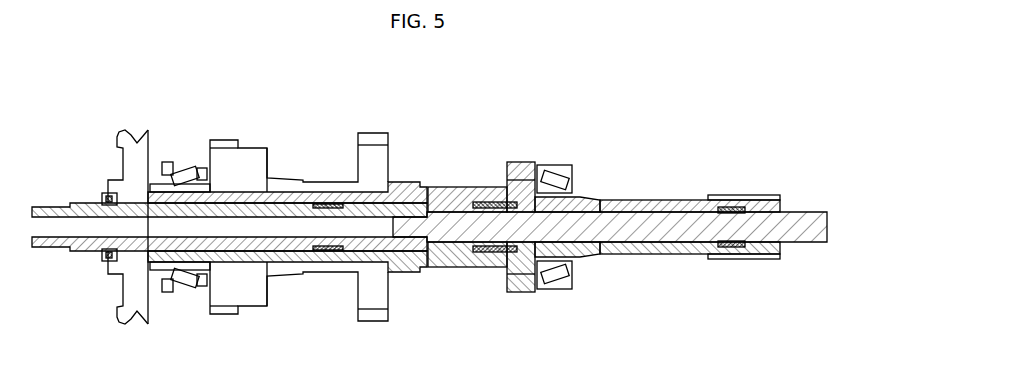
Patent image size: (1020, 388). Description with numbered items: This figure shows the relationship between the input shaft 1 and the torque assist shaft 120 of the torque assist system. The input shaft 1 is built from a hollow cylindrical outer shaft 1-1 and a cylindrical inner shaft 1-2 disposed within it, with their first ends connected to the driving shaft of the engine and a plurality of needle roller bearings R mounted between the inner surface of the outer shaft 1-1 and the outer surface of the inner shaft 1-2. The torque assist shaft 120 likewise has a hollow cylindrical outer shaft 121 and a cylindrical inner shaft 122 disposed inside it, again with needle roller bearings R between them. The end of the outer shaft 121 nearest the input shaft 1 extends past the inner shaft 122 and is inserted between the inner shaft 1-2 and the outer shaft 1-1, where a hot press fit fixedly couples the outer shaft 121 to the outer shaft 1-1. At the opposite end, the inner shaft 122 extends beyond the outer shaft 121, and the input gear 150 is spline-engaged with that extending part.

The input shaft 1 is at (796, 139).
The outer shaft 1-1 is at (665, 198).
The inner shaft 1-2 is at (803, 240).
The input gear 150 is at (128, 140).
The outer shaft 121 is at (195, 170).
The torque assist shaft 120 is at (286, 152).
The inner shaft 122 is at (283, 262).
The needle roller bearings R is at (127, 202).